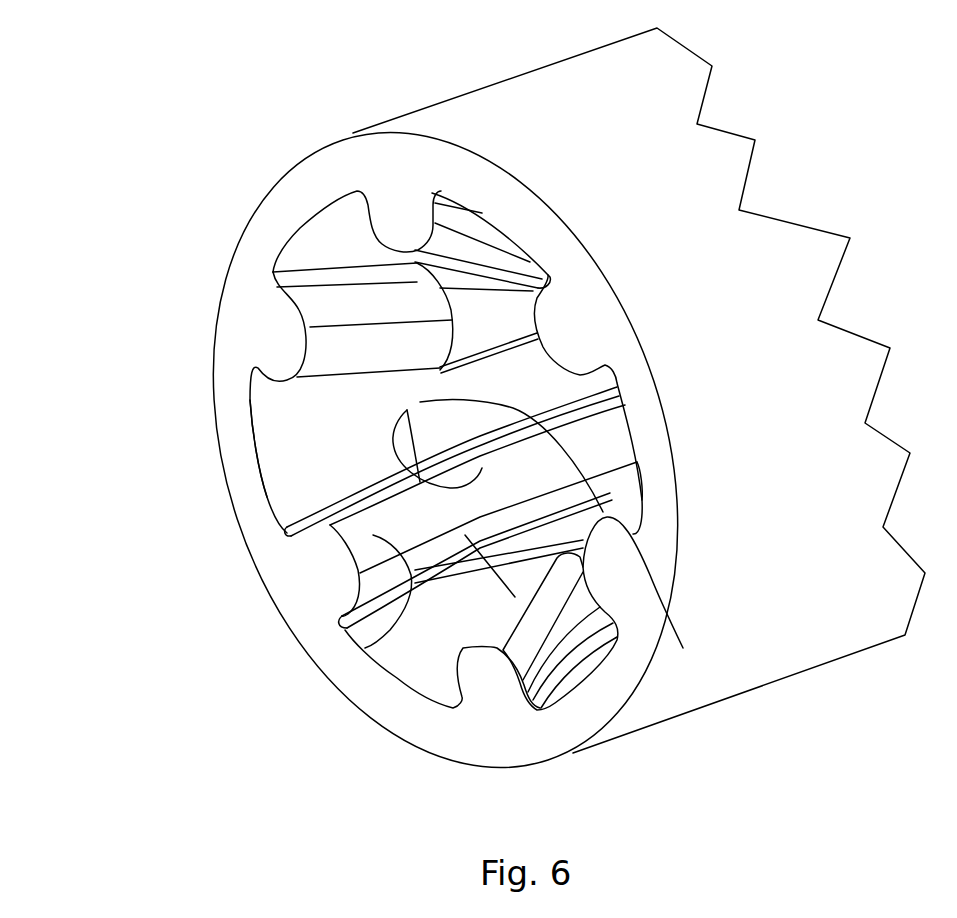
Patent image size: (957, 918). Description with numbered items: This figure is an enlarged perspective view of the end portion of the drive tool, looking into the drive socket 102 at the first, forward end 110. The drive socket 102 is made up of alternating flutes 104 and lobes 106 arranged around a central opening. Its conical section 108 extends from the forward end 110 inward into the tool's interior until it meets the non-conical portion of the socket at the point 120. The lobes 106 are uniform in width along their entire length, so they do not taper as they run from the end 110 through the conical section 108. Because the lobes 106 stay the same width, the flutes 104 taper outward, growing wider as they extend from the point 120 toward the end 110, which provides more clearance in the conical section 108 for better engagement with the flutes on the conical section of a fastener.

The drive socket 102 is at (200, 612).
The flutes 104 is at (280, 468).
The lobes 106 is at (333, 347).
The conical section 108 is at (292, 432).
The first, forward end 110 is at (277, 560).
The point 120 is at (601, 495).